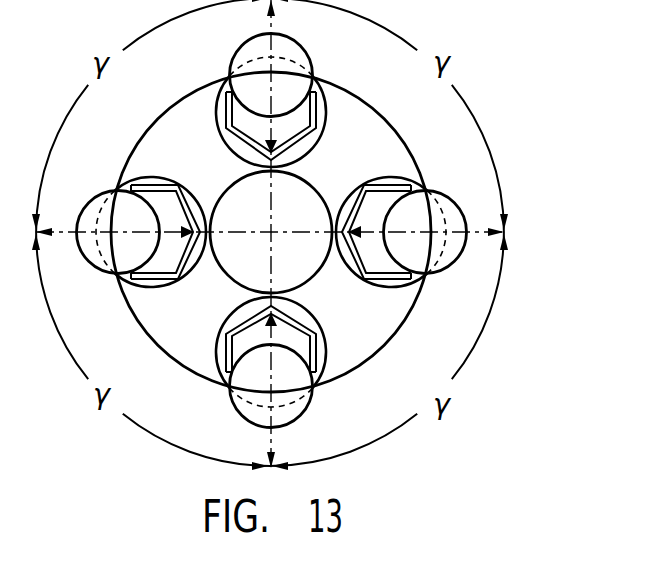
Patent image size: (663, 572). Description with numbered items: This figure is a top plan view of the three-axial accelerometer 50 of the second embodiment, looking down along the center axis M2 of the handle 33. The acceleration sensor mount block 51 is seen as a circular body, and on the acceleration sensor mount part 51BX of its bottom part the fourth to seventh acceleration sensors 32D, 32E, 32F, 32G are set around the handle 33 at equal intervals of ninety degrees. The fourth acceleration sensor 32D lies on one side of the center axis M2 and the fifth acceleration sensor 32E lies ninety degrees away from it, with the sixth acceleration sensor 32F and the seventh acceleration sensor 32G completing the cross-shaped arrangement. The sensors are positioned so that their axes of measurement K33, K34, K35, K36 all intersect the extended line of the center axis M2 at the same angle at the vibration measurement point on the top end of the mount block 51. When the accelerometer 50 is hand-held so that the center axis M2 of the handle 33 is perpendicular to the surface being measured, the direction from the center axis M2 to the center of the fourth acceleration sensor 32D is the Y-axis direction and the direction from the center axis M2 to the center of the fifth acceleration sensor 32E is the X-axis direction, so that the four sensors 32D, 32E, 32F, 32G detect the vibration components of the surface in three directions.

The three-axial accelerometer 50 is at (593, 152).
The acceleration sensor mount block 51 is at (392, 312).
The acceleration sensor mount part 51BX is at (327, 140).
The handle 33 is at (307, 192).
The fourth acceleration sensor 32D is at (445, 210).
The fifth acceleration sensor 32E is at (296, 61).
The sixth acceleration sensor 32F is at (100, 213).
The seventh acceleration sensor 32G is at (293, 405).
The axis of measurement K33 is at (468, 248).
The axis of measurement K34 is at (256, 52).
The axis of measurement K35 is at (92, 250).
The axis of measurement K36 is at (243, 406).
The center axis M2 is at (271, 232).